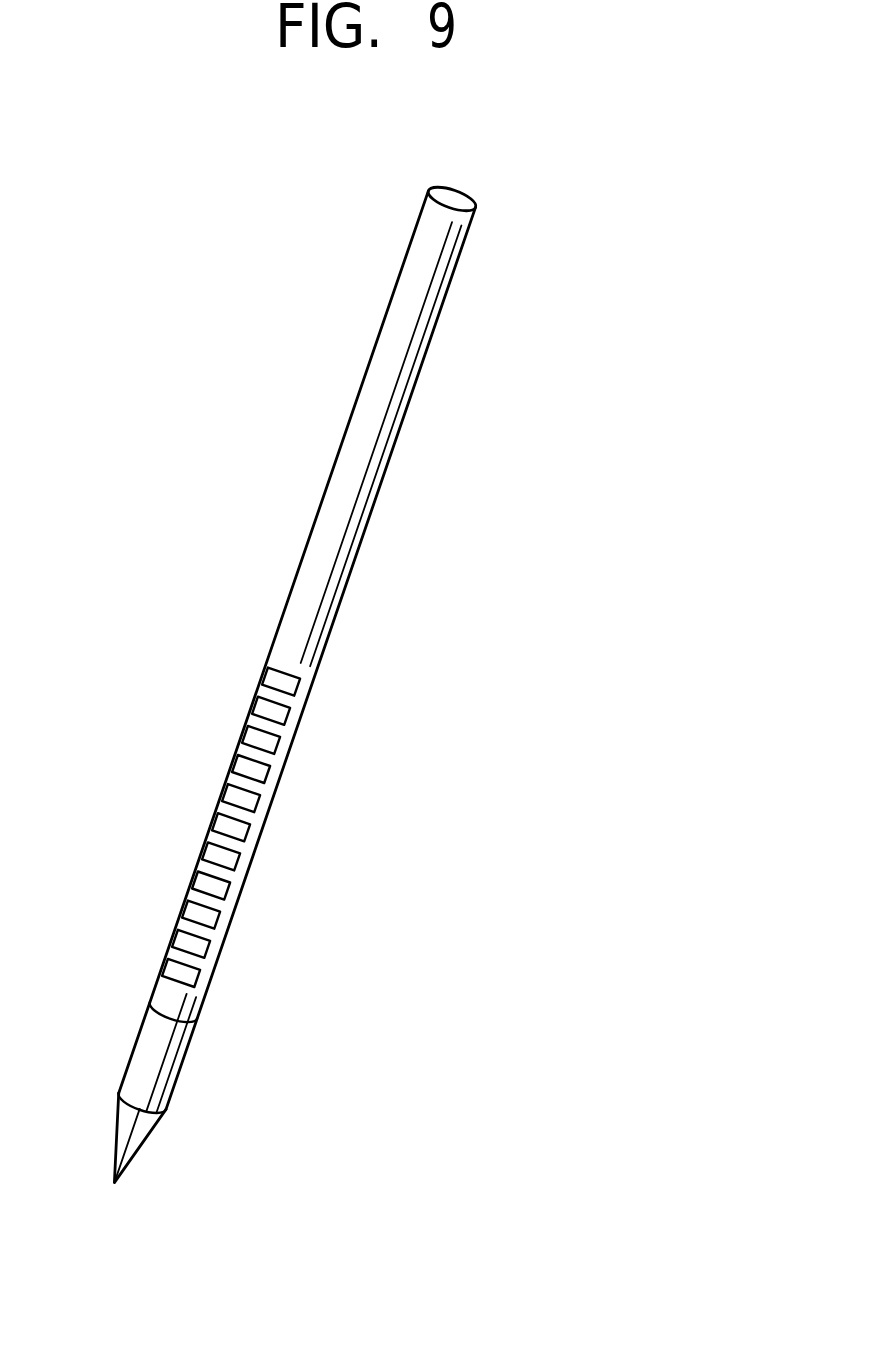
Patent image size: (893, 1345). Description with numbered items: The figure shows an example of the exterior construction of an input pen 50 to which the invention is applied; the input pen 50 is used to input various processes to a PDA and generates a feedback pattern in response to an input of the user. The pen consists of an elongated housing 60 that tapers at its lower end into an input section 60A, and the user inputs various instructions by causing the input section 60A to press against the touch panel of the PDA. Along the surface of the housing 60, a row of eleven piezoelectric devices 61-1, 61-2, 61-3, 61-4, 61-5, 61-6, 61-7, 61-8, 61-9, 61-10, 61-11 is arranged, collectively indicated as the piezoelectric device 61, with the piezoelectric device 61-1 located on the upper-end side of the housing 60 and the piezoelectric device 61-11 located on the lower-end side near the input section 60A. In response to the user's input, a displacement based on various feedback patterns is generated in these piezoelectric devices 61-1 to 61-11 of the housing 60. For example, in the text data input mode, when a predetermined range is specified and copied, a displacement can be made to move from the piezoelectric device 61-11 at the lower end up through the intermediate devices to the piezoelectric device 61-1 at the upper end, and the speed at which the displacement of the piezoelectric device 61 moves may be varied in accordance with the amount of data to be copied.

The input pen 50 is at (311, 729).
The housing 60 is at (375, 412).
The input section 60A is at (135, 1115).
The piezoelectric device 61 is at (326, 832).
The piezoelectric device 61-1 is at (291, 686).
The piezoelectric device 61-2 is at (281, 715).
The piezoelectric device 61-3 is at (271, 744).
The piezoelectric device 61-4 is at (261, 774).
The piezoelectric device 61-5 is at (251, 803).
The piezoelectric device 61-6 is at (241, 832).
The piezoelectric device 61-7 is at (234, 864).
The piezoelectric device 61-8 is at (224, 893).
The piezoelectric device 61-9 is at (214, 922).
The piezoelectric device 61-10 is at (204, 952).
The piezoelectric device 61-11 is at (244, 1005).